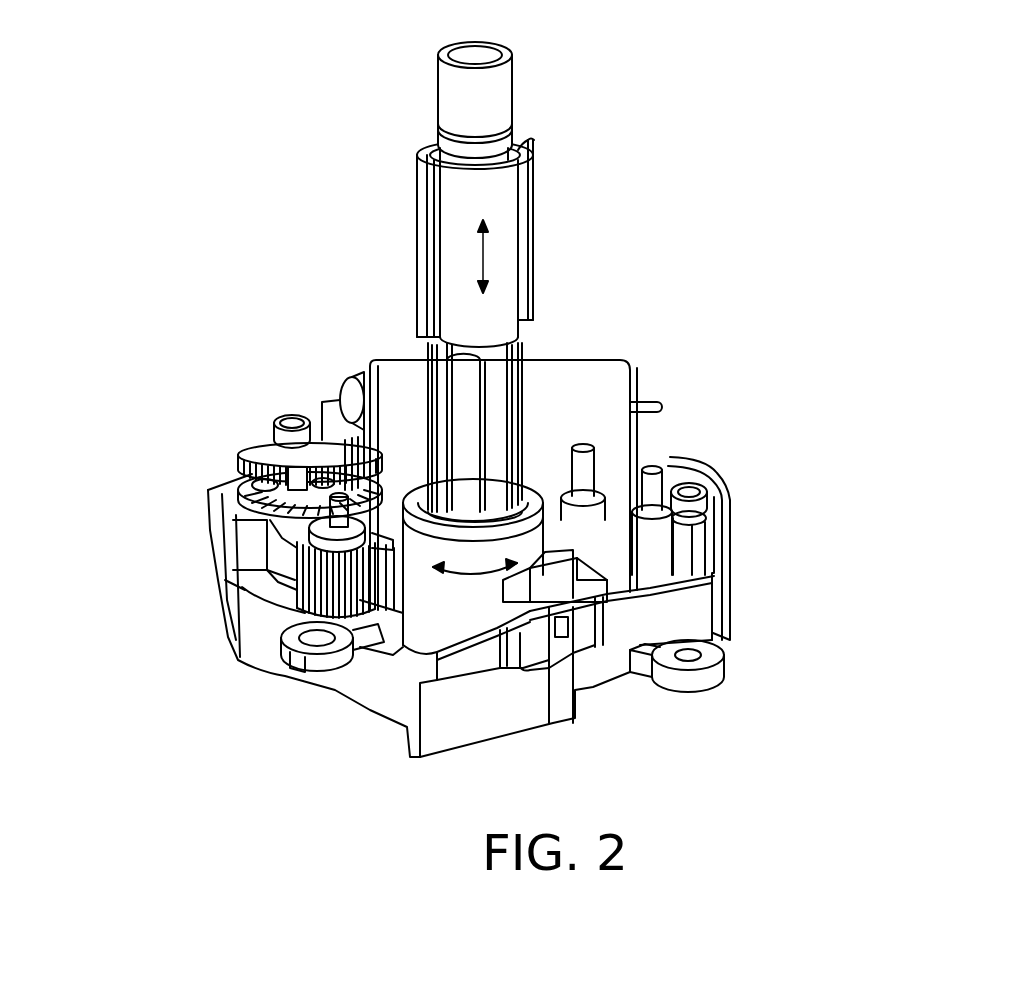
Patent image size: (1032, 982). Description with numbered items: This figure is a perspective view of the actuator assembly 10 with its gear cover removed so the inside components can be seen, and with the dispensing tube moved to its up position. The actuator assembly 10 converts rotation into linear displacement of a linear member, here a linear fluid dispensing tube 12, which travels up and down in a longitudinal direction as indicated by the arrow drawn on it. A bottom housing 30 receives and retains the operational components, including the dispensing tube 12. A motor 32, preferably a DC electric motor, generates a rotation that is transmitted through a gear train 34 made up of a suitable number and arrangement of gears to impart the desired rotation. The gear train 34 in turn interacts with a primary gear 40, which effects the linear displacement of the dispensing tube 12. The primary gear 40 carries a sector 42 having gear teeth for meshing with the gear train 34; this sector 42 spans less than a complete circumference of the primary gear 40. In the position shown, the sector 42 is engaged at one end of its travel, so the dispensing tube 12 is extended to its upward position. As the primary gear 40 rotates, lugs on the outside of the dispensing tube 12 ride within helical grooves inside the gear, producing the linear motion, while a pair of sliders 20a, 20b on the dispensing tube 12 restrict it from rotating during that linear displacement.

The actuator assembly 10 is at (165, 256).
The linear fluid dispensing tube 12 is at (515, 78).
The slider 20a is at (432, 228).
The slider 20b is at (533, 203).
The bottom housing 30 is at (727, 613).
The motor 32 is at (583, 360).
The gear train 34 is at (237, 437).
The primary gear 40 is at (540, 483).
The sector 42 is at (395, 592).